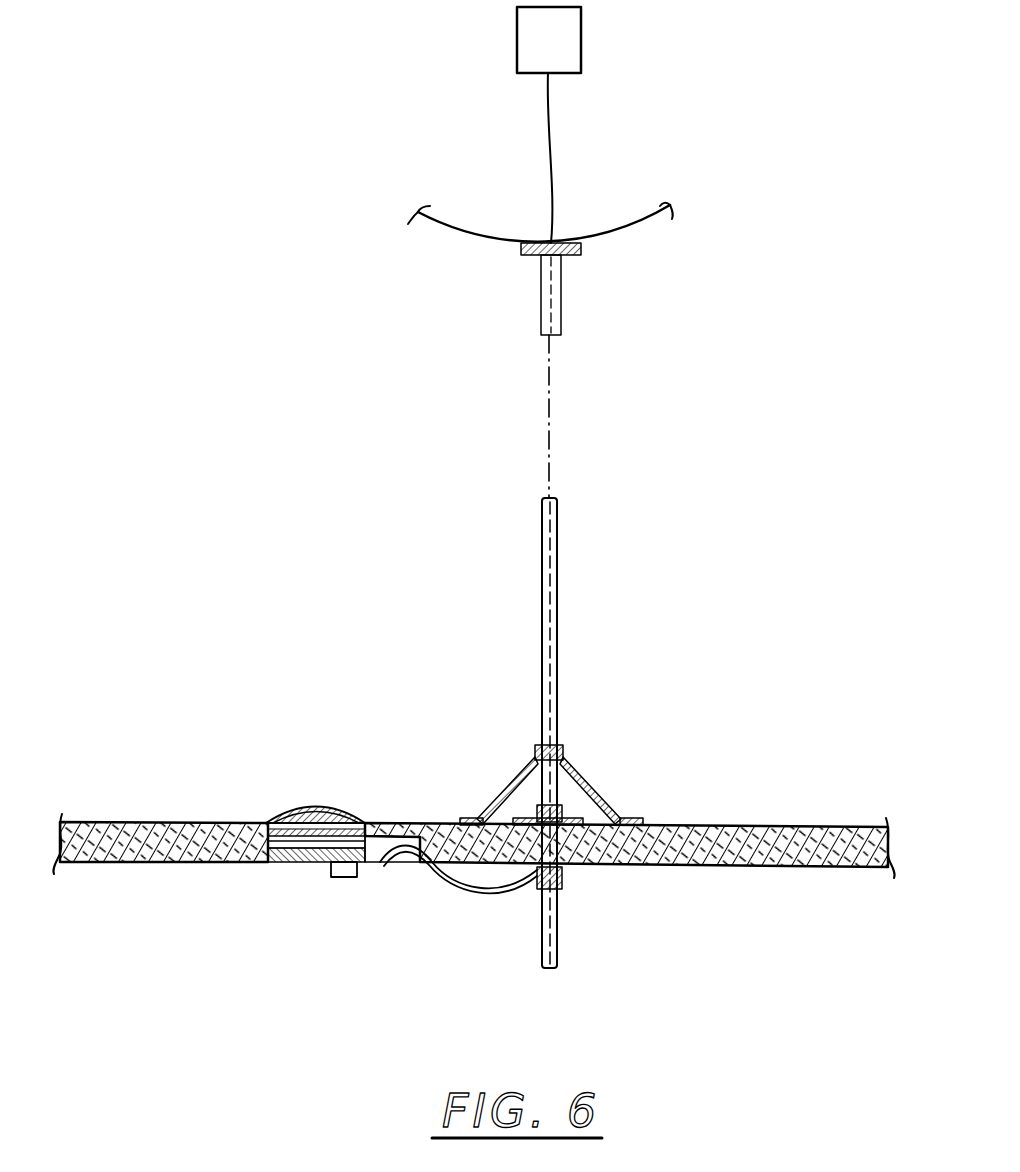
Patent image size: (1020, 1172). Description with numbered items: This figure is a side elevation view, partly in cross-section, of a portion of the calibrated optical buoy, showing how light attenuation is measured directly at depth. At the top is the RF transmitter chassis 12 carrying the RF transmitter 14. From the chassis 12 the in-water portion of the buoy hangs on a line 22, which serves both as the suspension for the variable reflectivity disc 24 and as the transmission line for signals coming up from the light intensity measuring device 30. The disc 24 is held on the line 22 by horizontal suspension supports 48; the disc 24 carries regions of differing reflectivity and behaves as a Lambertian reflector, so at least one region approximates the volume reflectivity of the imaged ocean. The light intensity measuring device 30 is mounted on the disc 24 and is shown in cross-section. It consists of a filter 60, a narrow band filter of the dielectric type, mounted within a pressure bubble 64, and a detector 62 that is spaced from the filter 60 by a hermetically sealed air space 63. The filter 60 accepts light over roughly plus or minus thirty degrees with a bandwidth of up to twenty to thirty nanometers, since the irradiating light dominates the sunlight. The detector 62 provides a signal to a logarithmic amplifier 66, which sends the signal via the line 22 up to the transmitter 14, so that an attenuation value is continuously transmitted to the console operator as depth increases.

The RF transmitter 14 is at (580, 52).
The RF transmitter chassis 12 is at (647, 233).
The line 22 is at (557, 593).
The horizontal suspension supports 48 is at (588, 790).
The variable reflectivity disc 24 is at (713, 826).
The light intensity measuring device 30 is at (300, 850).
The pressure bubble 64 is at (330, 808).
The filter 60 is at (283, 850).
The hermetically sealed air space 63 is at (305, 850).
The detector 62 is at (320, 852).
The logarithmic amplifier 66 is at (350, 877).